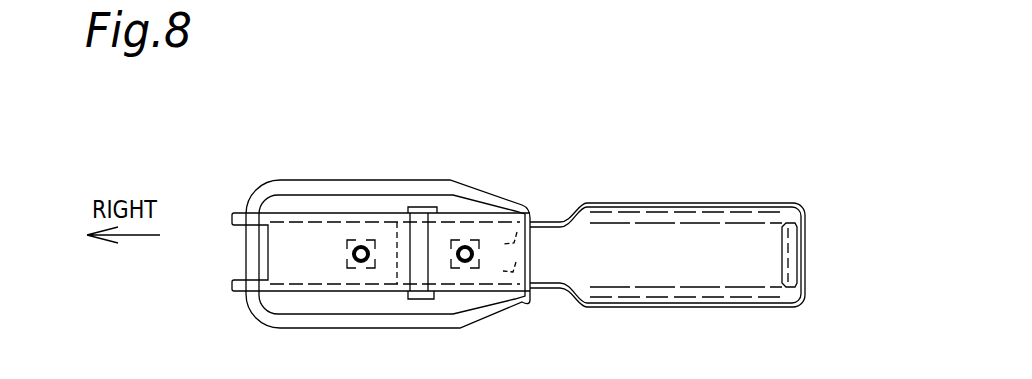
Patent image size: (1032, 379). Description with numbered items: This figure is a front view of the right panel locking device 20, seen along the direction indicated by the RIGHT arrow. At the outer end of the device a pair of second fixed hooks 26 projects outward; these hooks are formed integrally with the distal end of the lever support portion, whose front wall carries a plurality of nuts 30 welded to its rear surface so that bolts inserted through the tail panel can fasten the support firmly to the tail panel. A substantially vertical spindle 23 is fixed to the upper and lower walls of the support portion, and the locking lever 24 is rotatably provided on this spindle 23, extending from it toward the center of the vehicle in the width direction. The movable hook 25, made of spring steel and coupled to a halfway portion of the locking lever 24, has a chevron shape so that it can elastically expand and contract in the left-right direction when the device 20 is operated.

The panel locking device 20 is at (550, 147).
The spindle 23 is at (417, 207).
The locking lever 24 is at (667, 208).
The movable hook 25 is at (330, 191).
The second fixed hooks 26 is at (235, 222).
The nuts 30 is at (352, 270).